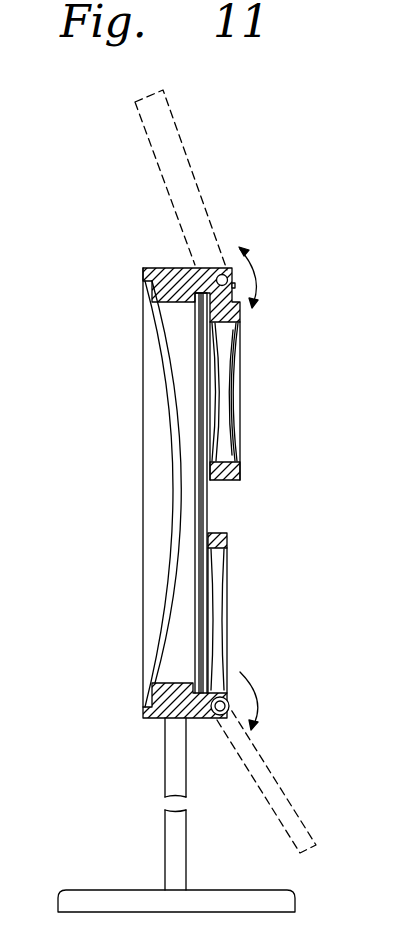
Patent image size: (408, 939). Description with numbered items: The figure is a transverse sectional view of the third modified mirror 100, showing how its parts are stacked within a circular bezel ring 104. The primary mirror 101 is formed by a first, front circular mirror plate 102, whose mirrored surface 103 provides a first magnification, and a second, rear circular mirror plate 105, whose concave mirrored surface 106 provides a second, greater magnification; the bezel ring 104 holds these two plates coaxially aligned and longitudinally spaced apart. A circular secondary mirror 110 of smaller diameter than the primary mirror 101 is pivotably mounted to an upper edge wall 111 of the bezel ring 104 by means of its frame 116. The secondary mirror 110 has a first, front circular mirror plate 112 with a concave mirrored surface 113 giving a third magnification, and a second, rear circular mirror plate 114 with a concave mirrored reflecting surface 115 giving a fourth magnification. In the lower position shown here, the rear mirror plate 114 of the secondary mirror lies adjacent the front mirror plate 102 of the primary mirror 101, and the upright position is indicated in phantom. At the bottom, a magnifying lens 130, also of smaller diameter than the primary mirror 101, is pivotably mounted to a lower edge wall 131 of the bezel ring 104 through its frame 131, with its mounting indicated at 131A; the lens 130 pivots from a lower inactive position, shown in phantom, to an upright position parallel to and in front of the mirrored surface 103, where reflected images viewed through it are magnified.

The third modified mirror 100 is at (143, 228).
The primary mirror 101 is at (141, 716).
The first, front circular mirror plate 102 is at (202, 528).
The mirrored surface 103 is at (212, 502).
The circular bezel ring 104 is at (147, 728).
The second, rear circular mirror plate 105 is at (162, 637).
The concave mirrored surface 106 is at (158, 588).
The circular secondary mirror 110 is at (264, 363).
The upper edge wall 111 is at (160, 268).
The first, front circular mirror plate 112 is at (232, 430).
The concave mirrored surface 113 is at (231, 392).
The second, rear circular mirror plate 114 is at (215, 385).
The concave mirrored reflecting surface 115 is at (235, 392).
The frame 116 is at (237, 467).
The magnifying lens 130 is at (236, 627).
The lower edge wall 131 is at (195, 720).
The hinge support 131A is at (227, 542).